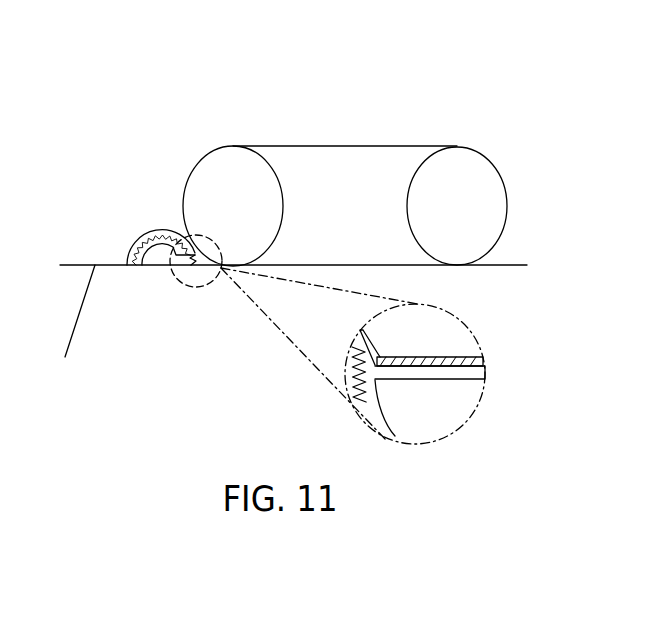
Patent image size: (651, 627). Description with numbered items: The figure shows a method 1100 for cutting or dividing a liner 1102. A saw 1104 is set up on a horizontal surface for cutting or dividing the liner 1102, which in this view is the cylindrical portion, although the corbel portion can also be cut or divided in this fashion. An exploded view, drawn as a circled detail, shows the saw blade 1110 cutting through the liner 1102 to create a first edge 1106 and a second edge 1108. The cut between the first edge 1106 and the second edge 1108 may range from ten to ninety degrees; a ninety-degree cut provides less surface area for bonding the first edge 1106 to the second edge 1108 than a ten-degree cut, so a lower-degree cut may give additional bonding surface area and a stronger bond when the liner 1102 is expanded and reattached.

The method 1100 is at (200, 114).
The liner 1102 is at (363, 150).
The saw 1104 is at (153, 228).
The first edge 1106 is at (458, 358).
The second edge 1108 is at (470, 377).
The saw blade 1110 is at (351, 356).